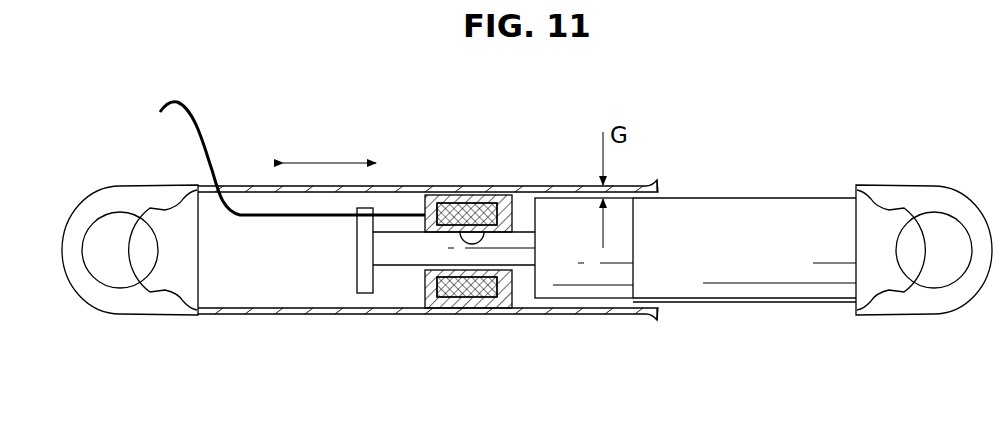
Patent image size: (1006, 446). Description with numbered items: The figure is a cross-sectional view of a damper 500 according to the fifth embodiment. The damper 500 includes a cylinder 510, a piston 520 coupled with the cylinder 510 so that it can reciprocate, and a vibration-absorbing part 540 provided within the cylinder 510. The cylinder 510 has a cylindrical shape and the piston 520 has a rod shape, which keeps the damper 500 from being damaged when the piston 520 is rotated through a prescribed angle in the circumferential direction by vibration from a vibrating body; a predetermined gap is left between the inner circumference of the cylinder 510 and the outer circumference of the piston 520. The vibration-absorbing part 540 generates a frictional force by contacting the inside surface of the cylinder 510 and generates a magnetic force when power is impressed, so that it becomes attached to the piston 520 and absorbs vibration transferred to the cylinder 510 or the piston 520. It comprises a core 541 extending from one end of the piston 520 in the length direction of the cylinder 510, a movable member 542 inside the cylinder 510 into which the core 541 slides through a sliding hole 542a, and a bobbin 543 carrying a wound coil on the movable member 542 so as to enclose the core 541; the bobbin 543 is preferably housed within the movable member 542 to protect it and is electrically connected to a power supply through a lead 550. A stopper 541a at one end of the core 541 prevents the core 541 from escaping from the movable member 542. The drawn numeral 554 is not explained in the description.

The damper 500 is at (842, 101).
The cylinder 510 is at (247, 187).
The piston 520 is at (772, 197).
The vibration-absorbing part 540 is at (523, 381).
The core 541 is at (402, 248).
The stopper 541a is at (358, 257).
The movable member 542 is at (431, 308).
The sliding hole 542a is at (472, 194).
The bobbin 543 is at (460, 308).
The spacer 554 is at (490, 303).
The lead 550 is at (208, 142).